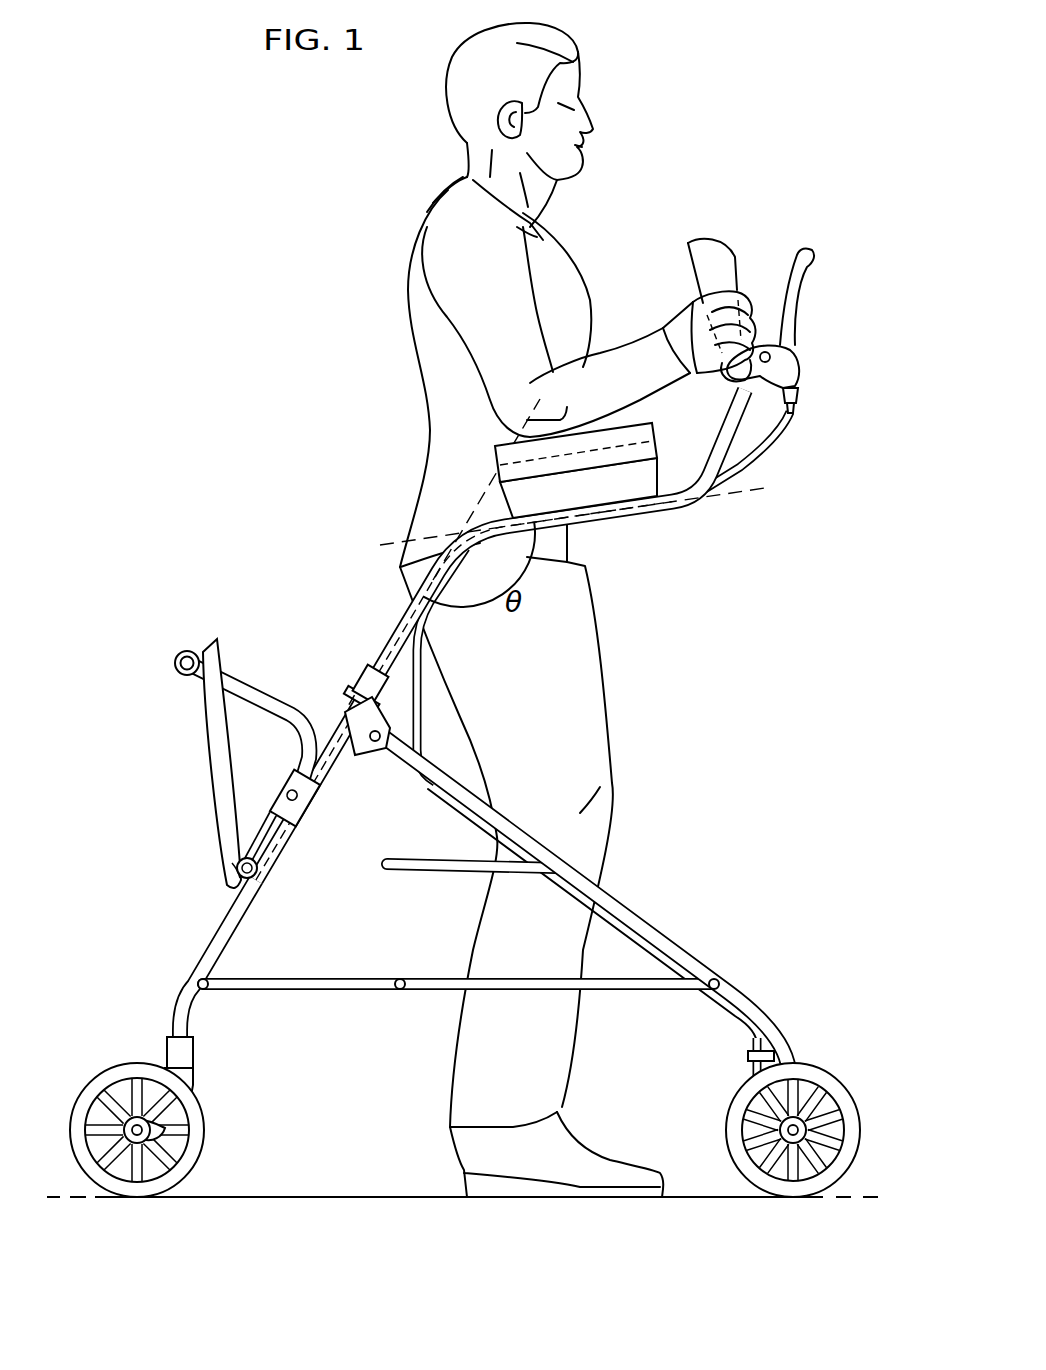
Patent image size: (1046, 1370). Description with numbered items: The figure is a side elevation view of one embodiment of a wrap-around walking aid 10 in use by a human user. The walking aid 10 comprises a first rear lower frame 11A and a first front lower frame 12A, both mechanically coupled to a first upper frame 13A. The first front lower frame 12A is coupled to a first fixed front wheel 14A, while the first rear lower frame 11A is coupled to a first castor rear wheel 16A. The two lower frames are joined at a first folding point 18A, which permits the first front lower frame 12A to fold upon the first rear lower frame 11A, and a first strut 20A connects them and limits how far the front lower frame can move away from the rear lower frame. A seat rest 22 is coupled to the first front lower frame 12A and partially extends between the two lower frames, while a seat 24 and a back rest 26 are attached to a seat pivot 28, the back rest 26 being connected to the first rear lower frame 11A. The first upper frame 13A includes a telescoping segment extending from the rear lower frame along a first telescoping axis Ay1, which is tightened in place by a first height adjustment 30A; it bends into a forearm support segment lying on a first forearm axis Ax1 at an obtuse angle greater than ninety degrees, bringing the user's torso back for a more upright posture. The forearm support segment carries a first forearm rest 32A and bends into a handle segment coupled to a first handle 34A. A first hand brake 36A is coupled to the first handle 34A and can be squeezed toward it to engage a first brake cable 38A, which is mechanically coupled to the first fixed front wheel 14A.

The wrap-around walking aid 10 is at (208, 427).
The first rear lower frame 11A is at (225, 934).
The first front lower frame 12A is at (672, 938).
The first upper frame 13A is at (461, 531).
The first fixed front wheel 14A is at (727, 1121).
The first castor rear wheel 16A is at (205, 1130).
The first folding point 18A is at (384, 732).
The first strut 20A is at (283, 994).
The seat rest 22 is at (385, 870).
The seat 24 is at (212, 782).
The back rest 26 is at (182, 652).
The seat pivot 28 is at (256, 880).
The first height adjustment 30A is at (364, 673).
The first forearm rest 32A is at (610, 467).
The first handle 34A is at (710, 250).
The first hand brake 36A is at (794, 297).
The first brake cable 38A is at (782, 430).
The first forearm axis Ax1 is at (750, 500).
The first telescoping axis Ay1 is at (509, 475).